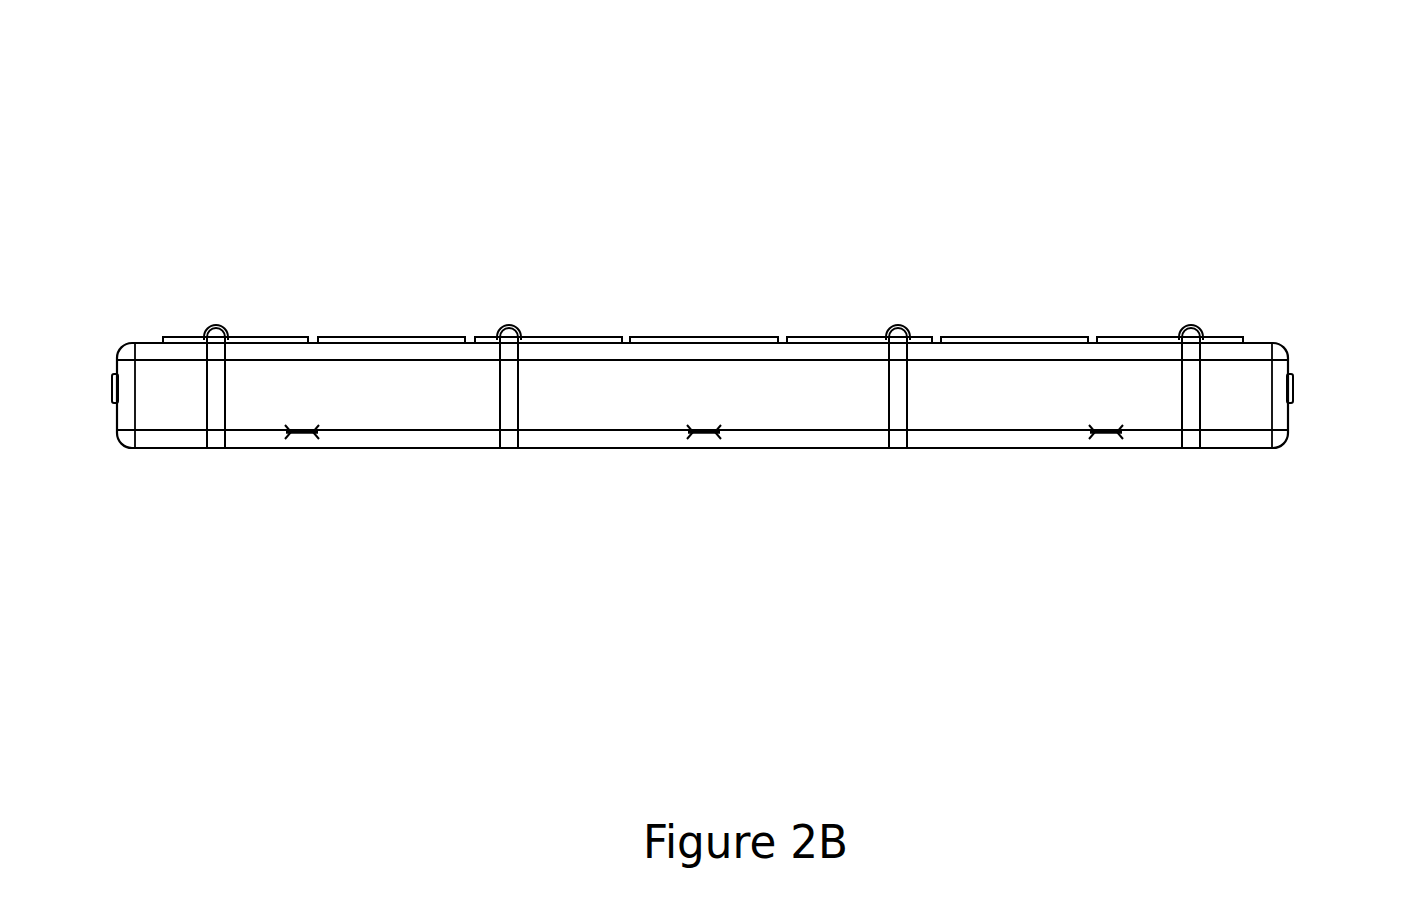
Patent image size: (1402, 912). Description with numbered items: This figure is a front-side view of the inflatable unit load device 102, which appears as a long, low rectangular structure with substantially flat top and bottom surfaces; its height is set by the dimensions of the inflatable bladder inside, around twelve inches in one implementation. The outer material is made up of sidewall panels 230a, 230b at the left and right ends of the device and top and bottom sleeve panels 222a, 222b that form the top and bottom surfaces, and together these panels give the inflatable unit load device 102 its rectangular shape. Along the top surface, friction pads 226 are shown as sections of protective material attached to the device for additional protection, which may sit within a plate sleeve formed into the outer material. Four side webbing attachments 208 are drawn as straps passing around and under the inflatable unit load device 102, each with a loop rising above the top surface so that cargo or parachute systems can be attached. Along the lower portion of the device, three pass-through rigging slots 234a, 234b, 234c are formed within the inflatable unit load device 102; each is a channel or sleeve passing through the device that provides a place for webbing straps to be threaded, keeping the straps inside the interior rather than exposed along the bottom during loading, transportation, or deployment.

The inflatable unit load device 102 is at (202, 66).
The side webbing attachments 208 is at (215, 325).
The top sleeve panel 222a is at (158, 350).
The bottom sleeve panel 222b is at (153, 437).
The friction pad 226 is at (335, 342).
The sidewall panel 230a is at (115, 413).
The sidewall panel 230b is at (1290, 420).
The pass-through rigging slot 234a is at (302, 437).
The pass-through rigging slot 234b is at (704, 437).
The pass-through rigging slot 234c is at (1106, 437).